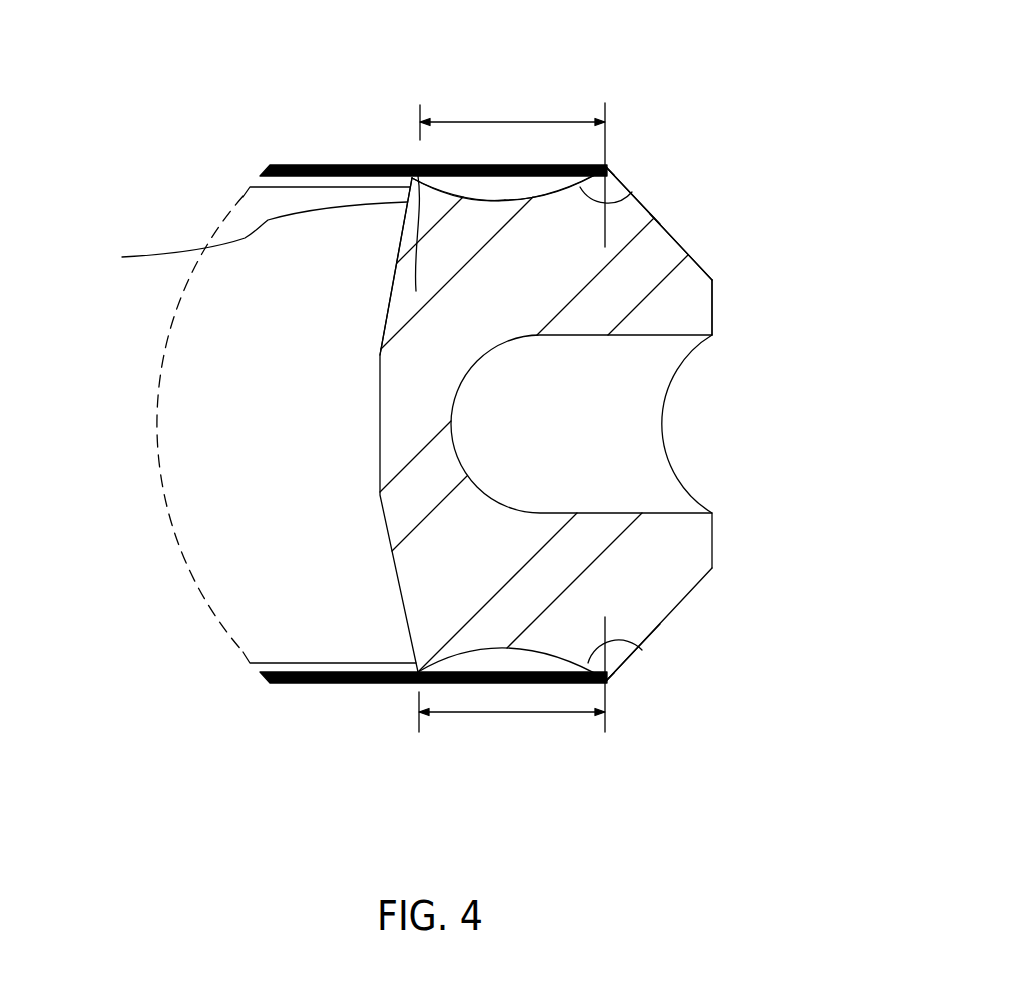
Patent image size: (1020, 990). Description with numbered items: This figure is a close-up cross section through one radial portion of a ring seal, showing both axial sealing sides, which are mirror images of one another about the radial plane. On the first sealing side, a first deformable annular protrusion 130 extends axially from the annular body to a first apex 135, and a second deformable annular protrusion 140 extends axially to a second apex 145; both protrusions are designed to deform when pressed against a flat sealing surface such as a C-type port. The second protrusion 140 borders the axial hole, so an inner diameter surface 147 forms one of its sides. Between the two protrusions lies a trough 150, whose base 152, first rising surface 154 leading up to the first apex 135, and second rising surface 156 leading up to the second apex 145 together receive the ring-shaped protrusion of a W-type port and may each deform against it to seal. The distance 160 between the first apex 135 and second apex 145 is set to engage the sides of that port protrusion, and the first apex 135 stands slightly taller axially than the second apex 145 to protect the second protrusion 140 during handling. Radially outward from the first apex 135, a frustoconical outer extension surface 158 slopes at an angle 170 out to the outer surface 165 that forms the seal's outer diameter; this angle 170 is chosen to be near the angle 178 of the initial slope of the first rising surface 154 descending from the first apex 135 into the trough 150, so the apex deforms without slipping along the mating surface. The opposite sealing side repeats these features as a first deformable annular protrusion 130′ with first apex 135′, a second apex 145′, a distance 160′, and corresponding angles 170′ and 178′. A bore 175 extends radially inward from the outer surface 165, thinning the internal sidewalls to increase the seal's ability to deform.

The first deformable annular protrusion 130 is at (630, 165).
The first deformable annular protrusion 130′ is at (640, 672).
The first apex 135 is at (607, 167).
The first apex 135′ is at (610, 679).
The second deformable annular protrusion 140 is at (397, 182).
The second apex 145 is at (418, 177).
The second apex 145′ is at (418, 678).
The inner diameter surface 147 is at (232, 238).
The trough 150 is at (505, 188).
The trough base 152 is at (488, 196).
The first rising surface 154 is at (583, 175).
The second rising surface 156 is at (417, 292).
The outer extension surface 158 is at (672, 235).
The distance 160 is at (590, 121).
The distance 160′ is at (526, 716).
The outer surface 165 is at (712, 318).
The angle 170 is at (620, 200).
The angle 170′ is at (610, 643).
The bores 175 is at (718, 430).
The angle 178 is at (580, 190).
The angle 178′ is at (590, 664).